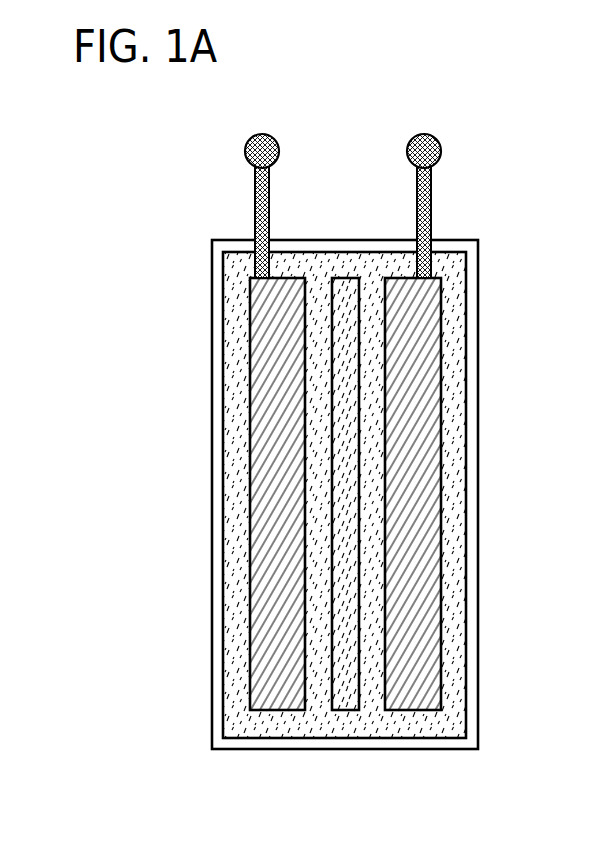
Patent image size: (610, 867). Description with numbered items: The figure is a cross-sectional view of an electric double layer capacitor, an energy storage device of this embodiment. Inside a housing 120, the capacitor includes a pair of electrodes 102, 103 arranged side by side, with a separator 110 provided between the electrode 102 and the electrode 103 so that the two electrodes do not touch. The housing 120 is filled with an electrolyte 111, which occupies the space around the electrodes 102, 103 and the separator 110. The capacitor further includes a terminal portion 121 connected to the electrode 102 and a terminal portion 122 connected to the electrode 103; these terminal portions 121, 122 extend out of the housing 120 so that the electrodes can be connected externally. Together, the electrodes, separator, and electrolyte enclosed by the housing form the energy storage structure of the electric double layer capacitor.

The electrode 102 is at (272, 698).
The electrode 103 is at (413, 698).
The separator 110 is at (347, 287).
The electrolyte 111 is at (458, 268).
The housing 120 is at (474, 374).
The terminal portion 121 is at (263, 134).
The terminal portion 122 is at (428, 134).